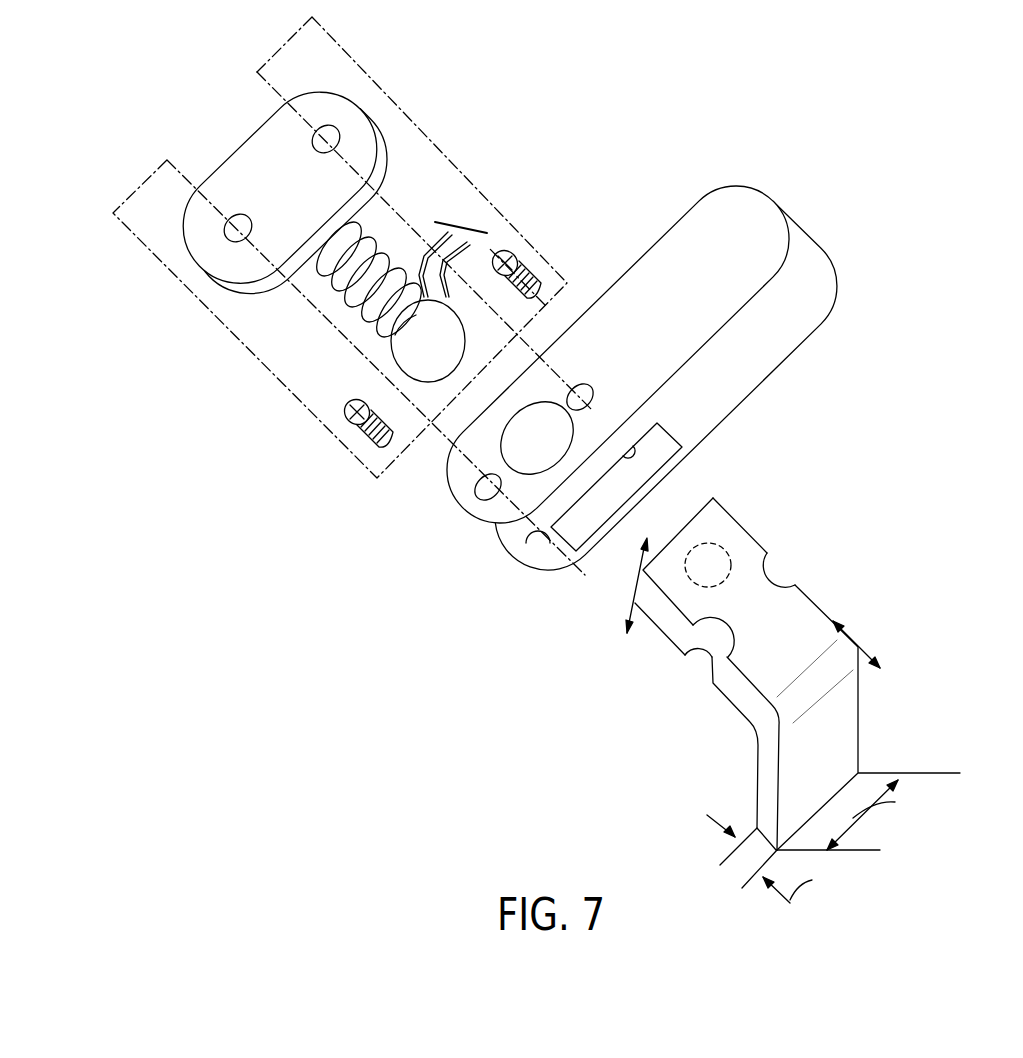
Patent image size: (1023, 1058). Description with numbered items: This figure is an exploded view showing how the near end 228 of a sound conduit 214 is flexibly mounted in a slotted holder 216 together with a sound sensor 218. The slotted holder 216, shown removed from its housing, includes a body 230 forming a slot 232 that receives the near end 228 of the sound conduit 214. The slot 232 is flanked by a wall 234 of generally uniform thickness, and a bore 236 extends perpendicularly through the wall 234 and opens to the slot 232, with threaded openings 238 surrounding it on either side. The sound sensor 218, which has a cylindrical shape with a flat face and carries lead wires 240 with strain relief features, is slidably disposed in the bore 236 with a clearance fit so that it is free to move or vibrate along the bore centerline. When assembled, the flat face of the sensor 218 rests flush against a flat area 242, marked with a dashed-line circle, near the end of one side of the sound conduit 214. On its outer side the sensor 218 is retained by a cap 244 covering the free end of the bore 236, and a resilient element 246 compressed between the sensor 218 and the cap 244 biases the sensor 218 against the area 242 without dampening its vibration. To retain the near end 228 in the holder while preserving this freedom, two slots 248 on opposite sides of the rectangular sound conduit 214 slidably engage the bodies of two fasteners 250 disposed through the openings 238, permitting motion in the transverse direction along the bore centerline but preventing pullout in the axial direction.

The sound conduit 214 is at (793, 688).
The slotted holder 216 is at (652, 385).
The sound sensor 218 is at (440, 335).
The near end 228 is at (822, 663).
The body 230 is at (827, 298).
The slot 232 is at (567, 535).
The wall 234 is at (507, 530).
The bore 236 is at (533, 456).
The threaded openings 238 is at (595, 381).
The lead wires 240 is at (462, 223).
The area 242 is at (723, 540).
The cap 244 is at (257, 153).
The resilient element 246 is at (400, 268).
The slots 248 is at (775, 570).
The fasteners 250 is at (503, 252).